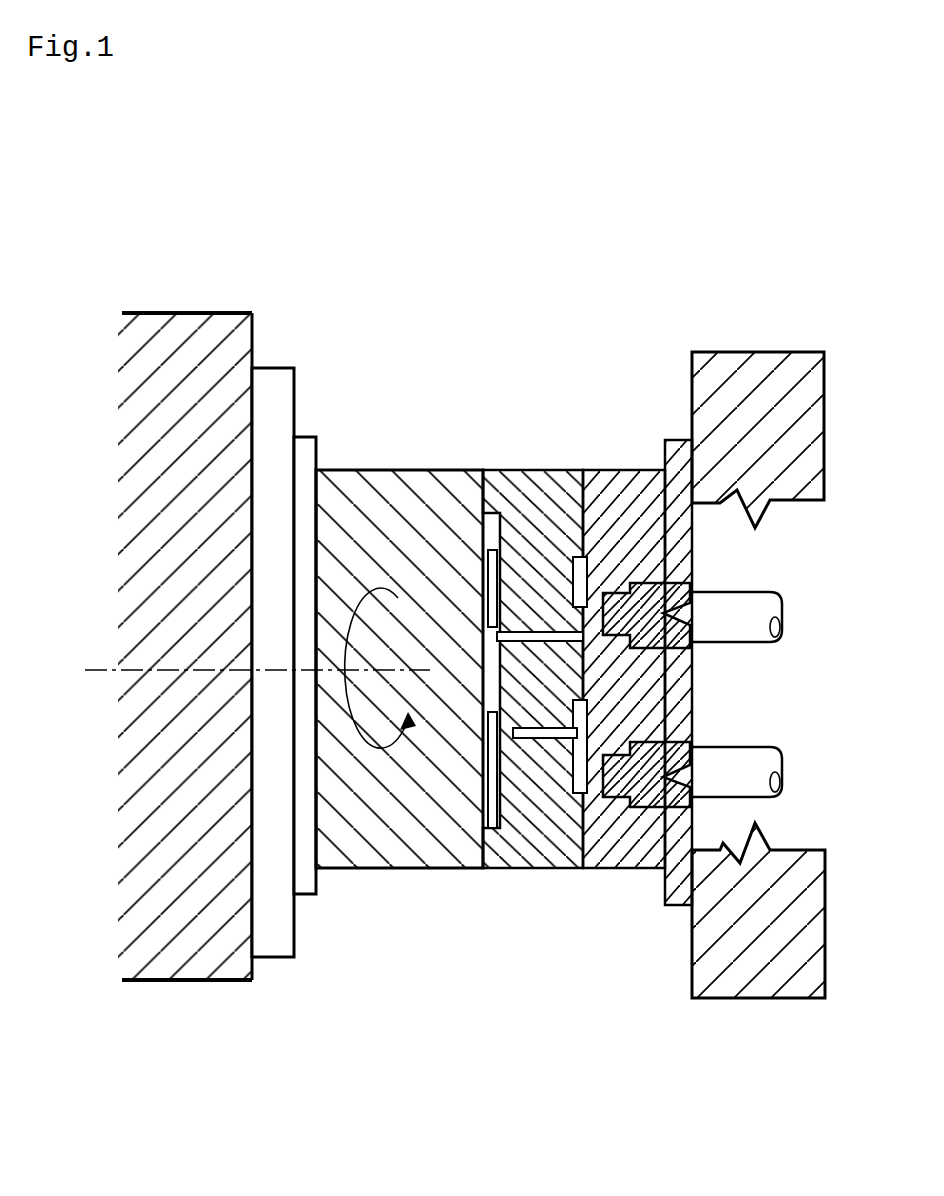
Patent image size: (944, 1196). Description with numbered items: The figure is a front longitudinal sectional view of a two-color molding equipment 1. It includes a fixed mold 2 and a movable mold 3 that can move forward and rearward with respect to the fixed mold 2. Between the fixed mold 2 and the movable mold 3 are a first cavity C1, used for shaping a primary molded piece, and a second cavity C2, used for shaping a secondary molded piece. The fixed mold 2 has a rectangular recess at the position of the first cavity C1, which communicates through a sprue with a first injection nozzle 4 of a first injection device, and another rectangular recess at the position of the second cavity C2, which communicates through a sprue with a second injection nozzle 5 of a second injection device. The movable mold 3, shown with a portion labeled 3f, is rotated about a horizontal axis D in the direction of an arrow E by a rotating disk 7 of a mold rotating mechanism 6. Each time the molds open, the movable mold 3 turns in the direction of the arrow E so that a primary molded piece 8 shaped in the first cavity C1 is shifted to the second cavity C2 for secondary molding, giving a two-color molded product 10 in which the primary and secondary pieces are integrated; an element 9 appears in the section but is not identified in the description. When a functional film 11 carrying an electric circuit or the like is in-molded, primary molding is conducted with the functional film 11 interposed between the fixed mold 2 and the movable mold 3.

The two-color molding equipment 1 is at (587, 215).
The fixed mold 2 is at (558, 470).
The movable mold 3 is at (345, 470).
The flange portion of rotating body 3f is at (500, 523).
The first injection nozzle 4 is at (763, 593).
The second injection nozzle 5 is at (763, 747).
The mold rotating mechanism 6 is at (270, 368).
The rotating disk 7 is at (303, 437).
The primary molded piece 8 is at (490, 605).
The spacer 9 is at (535, 795).
The two-color molded product 10 is at (580, 955).
The functional film 11 is at (495, 634).
The first cavity C1 is at (478, 577).
The second cavity C2 is at (492, 752).
The horizontal axis D is at (240, 649).
The arrow E is at (375, 685).